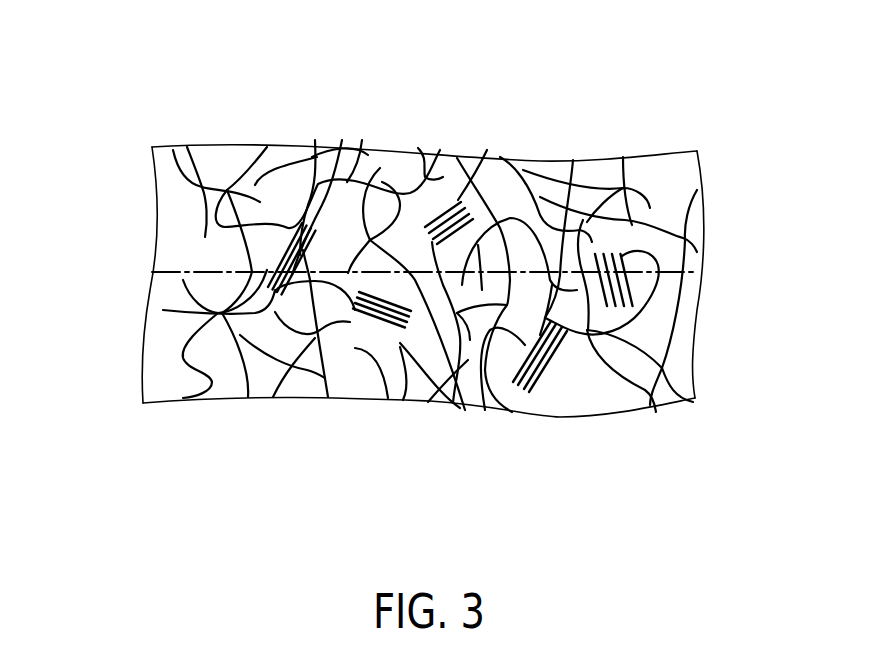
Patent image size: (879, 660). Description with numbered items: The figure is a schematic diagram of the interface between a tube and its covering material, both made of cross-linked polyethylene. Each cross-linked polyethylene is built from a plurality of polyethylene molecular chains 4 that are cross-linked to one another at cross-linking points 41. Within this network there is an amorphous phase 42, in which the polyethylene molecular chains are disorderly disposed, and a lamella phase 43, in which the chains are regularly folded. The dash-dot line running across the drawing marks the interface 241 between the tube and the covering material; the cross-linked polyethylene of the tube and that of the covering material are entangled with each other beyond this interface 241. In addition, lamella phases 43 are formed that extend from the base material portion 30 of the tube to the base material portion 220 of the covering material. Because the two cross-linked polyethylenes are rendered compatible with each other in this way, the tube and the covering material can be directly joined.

The polyethylene molecular chain 4 is at (418, 148).
The base material portion of the tube 30 is at (665, 178).
The cross-linking point 41 is at (342, 140).
The amorphous phase 42 is at (221, 158).
The lamella phase 43 is at (452, 198).
The base material portion of the covering material 220 is at (598, 393).
The interface 241 is at (672, 271).